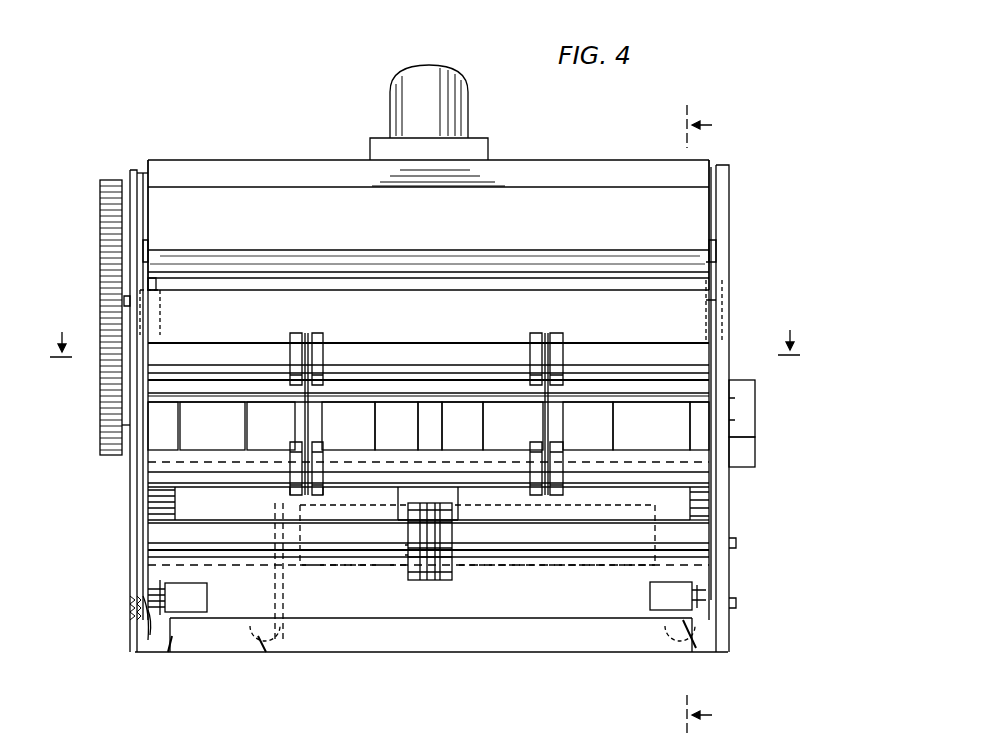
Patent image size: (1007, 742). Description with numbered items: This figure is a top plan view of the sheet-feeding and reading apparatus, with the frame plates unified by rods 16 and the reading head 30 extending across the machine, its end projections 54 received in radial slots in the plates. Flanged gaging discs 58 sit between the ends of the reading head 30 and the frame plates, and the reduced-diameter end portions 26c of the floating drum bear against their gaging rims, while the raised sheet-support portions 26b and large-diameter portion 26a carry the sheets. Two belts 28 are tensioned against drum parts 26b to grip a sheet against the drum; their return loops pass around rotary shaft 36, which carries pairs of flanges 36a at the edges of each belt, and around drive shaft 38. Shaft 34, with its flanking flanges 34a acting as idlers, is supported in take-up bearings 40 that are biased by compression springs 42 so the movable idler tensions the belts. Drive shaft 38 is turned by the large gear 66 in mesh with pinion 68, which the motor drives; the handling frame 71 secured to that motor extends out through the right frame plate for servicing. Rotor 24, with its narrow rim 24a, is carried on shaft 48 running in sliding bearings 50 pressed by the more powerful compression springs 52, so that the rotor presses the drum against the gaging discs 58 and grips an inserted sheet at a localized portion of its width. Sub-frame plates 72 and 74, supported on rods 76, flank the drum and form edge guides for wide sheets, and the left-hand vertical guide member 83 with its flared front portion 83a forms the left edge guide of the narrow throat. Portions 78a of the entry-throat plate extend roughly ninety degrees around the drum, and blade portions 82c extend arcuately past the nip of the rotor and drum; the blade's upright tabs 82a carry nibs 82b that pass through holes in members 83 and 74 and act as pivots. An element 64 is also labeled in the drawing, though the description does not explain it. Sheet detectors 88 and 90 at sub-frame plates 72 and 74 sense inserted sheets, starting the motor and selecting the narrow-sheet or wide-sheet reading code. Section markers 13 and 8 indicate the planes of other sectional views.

The rods 16 is at (262, 266).
The reading head 30 is at (452, 228).
The projections 54 is at (718, 174).
The large gear 66 is at (100, 205).
The pinion 68 is at (100, 425).
The drive shaft 38 is at (126, 298).
The flanged gaging discs 58 is at (162, 300).
The rotary shaft 36 is at (226, 358).
The flanges 36a is at (560, 333).
The transfer roller 64 is at (362, 395).
The paper-supporting drum area 26a is at (430, 436).
The drum parts 26b is at (358, 441).
The drum end portions 26c is at (166, 418).
The belts 28 is at (296, 430).
The entry-throat plate portions 78a is at (226, 441).
The compression springs 42 is at (742, 412).
The handling frame 71 is at (758, 450).
The sub-frame plate 72 is at (162, 497).
The take-up bearings 40 is at (130, 497).
The shaft 48 is at (158, 520).
The sliding bearings 50 is at (130, 557).
The compression springs 52 is at (130, 606).
The rods 76 is at (143, 630).
The rotary shaft 34 is at (230, 480).
The flanges 34a is at (312, 494).
The blade portions 82c is at (300, 511).
The sub-frame plate 74 is at (690, 520).
The sheet detector 90 is at (207, 600).
The sheet detector 88 is at (650, 592).
The left-hand vertical guide member 83 is at (283, 596).
The outward flared front portion 83a is at (236, 652).
The rotor 24 is at (450, 582).
The narrow rim 24a is at (420, 582).
The upright tabs 82a is at (270, 652).
The nibs 82b is at (262, 633).
The section line 13 is at (686, 420).
The section line 8 is at (425, 361).